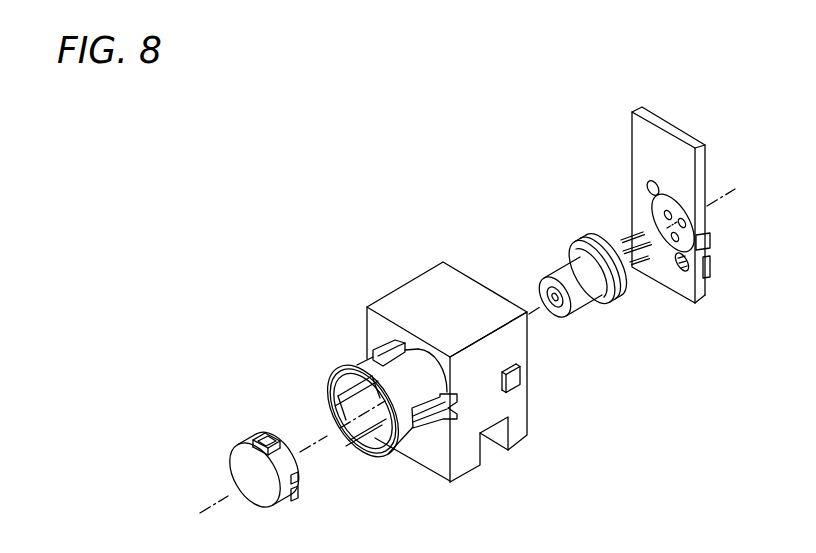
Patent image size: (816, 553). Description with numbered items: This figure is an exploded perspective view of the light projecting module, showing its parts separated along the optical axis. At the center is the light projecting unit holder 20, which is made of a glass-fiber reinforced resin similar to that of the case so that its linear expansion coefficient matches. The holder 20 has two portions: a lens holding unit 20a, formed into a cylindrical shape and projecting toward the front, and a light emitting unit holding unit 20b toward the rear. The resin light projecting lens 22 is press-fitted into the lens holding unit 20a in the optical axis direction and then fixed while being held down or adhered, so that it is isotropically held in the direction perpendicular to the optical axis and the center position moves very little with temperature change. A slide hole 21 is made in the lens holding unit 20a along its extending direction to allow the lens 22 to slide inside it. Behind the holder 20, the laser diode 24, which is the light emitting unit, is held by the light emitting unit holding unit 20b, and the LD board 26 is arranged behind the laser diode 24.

The light projecting unit holder 20 is at (409, 302).
The lens holding unit 20a is at (410, 430).
The light emitting unit holding unit 20b is at (518, 410).
The slide hole 21 is at (388, 342).
The light projecting lens 22 is at (263, 498).
The laser diode 24 is at (568, 277).
The LD board 26 is at (675, 135).